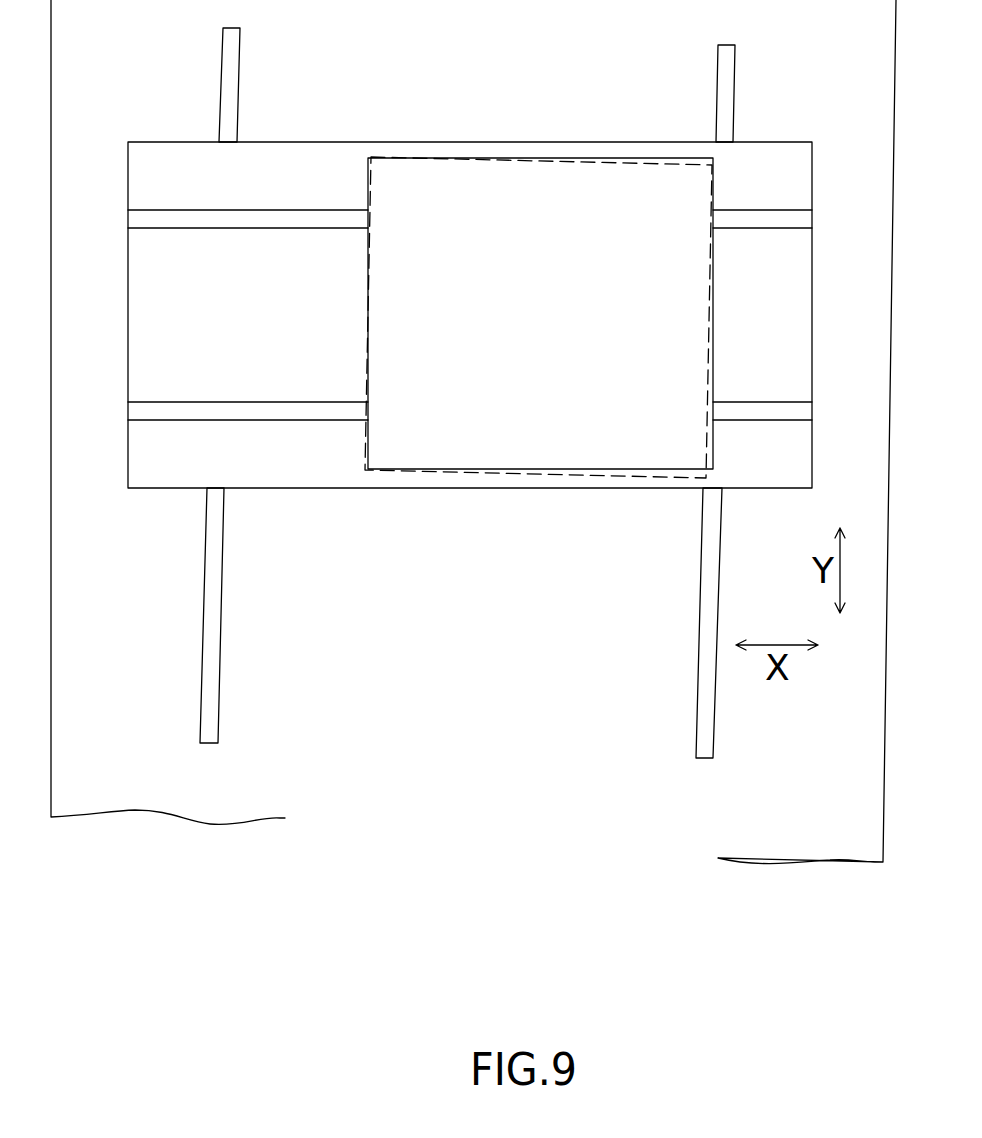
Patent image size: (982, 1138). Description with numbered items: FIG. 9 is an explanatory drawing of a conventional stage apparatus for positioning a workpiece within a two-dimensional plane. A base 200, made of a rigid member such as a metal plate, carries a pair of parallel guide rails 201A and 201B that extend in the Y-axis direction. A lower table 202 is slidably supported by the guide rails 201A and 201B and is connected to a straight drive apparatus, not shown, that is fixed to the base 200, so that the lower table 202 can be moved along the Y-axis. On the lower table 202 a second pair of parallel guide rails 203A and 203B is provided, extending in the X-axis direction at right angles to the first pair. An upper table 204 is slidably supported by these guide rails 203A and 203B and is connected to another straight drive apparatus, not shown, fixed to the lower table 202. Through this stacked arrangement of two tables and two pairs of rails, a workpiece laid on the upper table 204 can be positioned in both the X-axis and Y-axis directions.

The base 200 is at (137, 793).
The guide rail 201A is at (213, 735).
The guide rail 201B is at (712, 747).
The lower table 202 is at (287, 478).
The guide rail 203A is at (135, 218).
The guide rail 203B is at (155, 412).
The upper table 204 is at (590, 163).